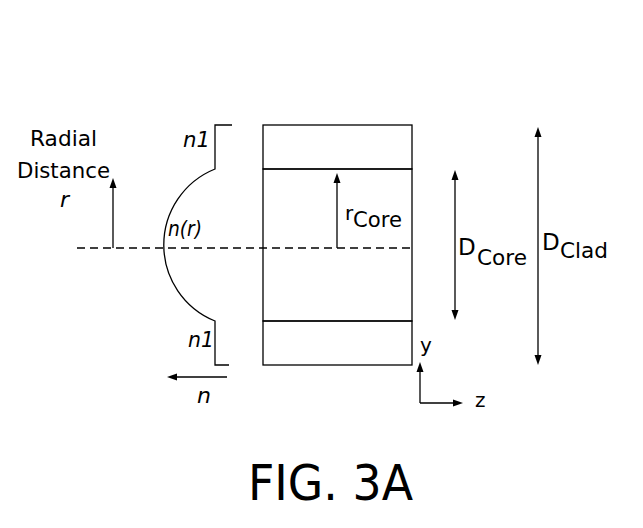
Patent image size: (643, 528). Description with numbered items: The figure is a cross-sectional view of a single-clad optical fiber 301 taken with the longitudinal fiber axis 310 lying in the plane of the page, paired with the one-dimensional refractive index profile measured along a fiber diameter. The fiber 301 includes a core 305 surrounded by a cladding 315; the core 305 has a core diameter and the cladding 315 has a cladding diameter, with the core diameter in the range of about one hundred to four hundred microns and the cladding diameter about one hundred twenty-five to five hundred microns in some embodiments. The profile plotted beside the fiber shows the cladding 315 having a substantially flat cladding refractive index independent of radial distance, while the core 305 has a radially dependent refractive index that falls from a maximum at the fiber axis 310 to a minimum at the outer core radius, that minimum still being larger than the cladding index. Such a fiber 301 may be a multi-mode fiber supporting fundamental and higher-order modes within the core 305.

The optical fiber 301 is at (246, 76).
The core 305 is at (360, 295).
The fiber axis 310 is at (91, 257).
The cladding 315 is at (360, 161).